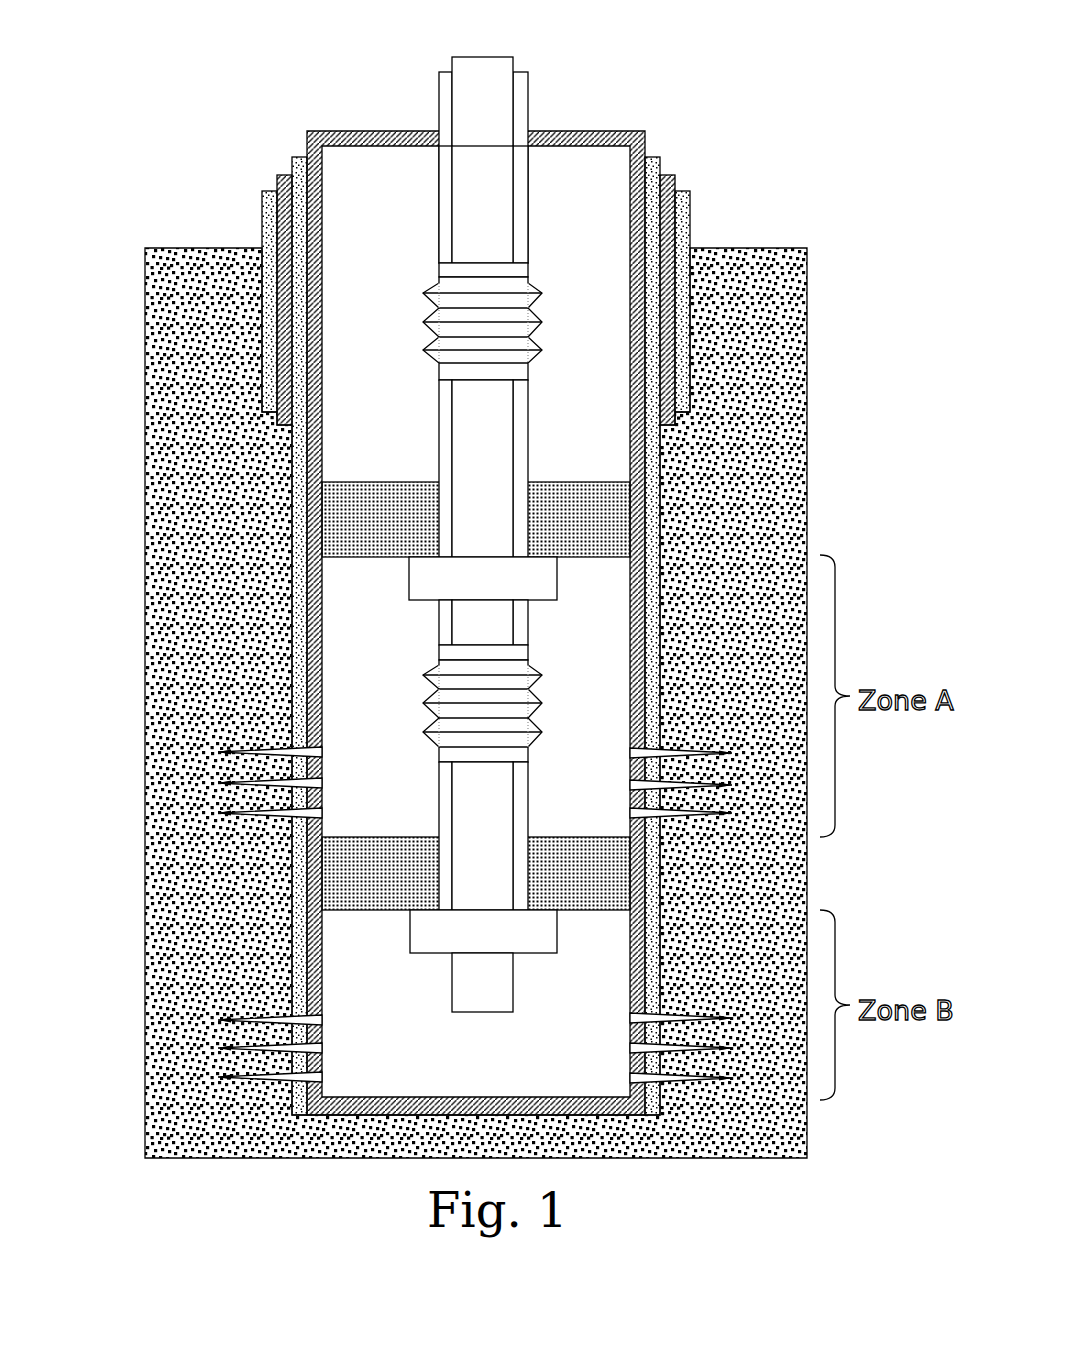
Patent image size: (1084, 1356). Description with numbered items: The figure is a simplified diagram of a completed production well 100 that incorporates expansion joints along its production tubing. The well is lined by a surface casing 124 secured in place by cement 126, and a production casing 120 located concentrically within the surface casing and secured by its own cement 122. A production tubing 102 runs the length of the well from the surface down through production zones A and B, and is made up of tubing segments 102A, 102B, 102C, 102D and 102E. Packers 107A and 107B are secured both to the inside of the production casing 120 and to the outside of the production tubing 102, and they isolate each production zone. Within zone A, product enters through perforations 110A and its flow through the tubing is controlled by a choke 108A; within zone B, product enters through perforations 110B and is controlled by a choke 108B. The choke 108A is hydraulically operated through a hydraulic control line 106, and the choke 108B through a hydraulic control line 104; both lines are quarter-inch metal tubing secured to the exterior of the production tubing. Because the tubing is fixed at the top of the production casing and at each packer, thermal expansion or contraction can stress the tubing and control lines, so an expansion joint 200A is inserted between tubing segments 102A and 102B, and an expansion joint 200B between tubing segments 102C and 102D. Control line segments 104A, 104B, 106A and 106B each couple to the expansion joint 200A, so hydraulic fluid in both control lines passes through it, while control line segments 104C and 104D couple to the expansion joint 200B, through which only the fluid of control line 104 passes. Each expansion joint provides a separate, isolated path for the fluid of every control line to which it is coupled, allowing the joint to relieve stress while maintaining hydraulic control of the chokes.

The production well 100 is at (144, 99).
The production tubing 102 is at (498, 57).
The hydraulic control line 104 is at (437, 87).
The hydraulic control line 106 is at (530, 117).
The tubing segment 102A is at (468, 204).
The control line segment 104A is at (437, 248).
The control line segment 106A is at (530, 220).
The production casing 120 is at (646, 143).
The cement 122 is at (661, 160).
The surface casing 124 is at (676, 175).
The cement 126 is at (691, 235).
The expansion joint 200A is at (543, 322).
The tubing segment 102B is at (468, 395).
The control line segment 104B is at (437, 438).
The control line segment 106B is at (530, 395).
The packer 107A is at (540, 481).
The choke 108A is at (408, 571).
The tubing segment 102C is at (497, 628).
The control line segment 104C is at (438, 628).
The expansion joint 200B is at (543, 703).
The control line segment 104D is at (438, 777).
The tubing segment 102D is at (497, 773).
The perforations 110A is at (338, 747).
The choke 108B is at (409, 923).
The packer 107B is at (616, 911).
The tubing segment 102E is at (497, 1013).
The perforations 110B is at (333, 1012).